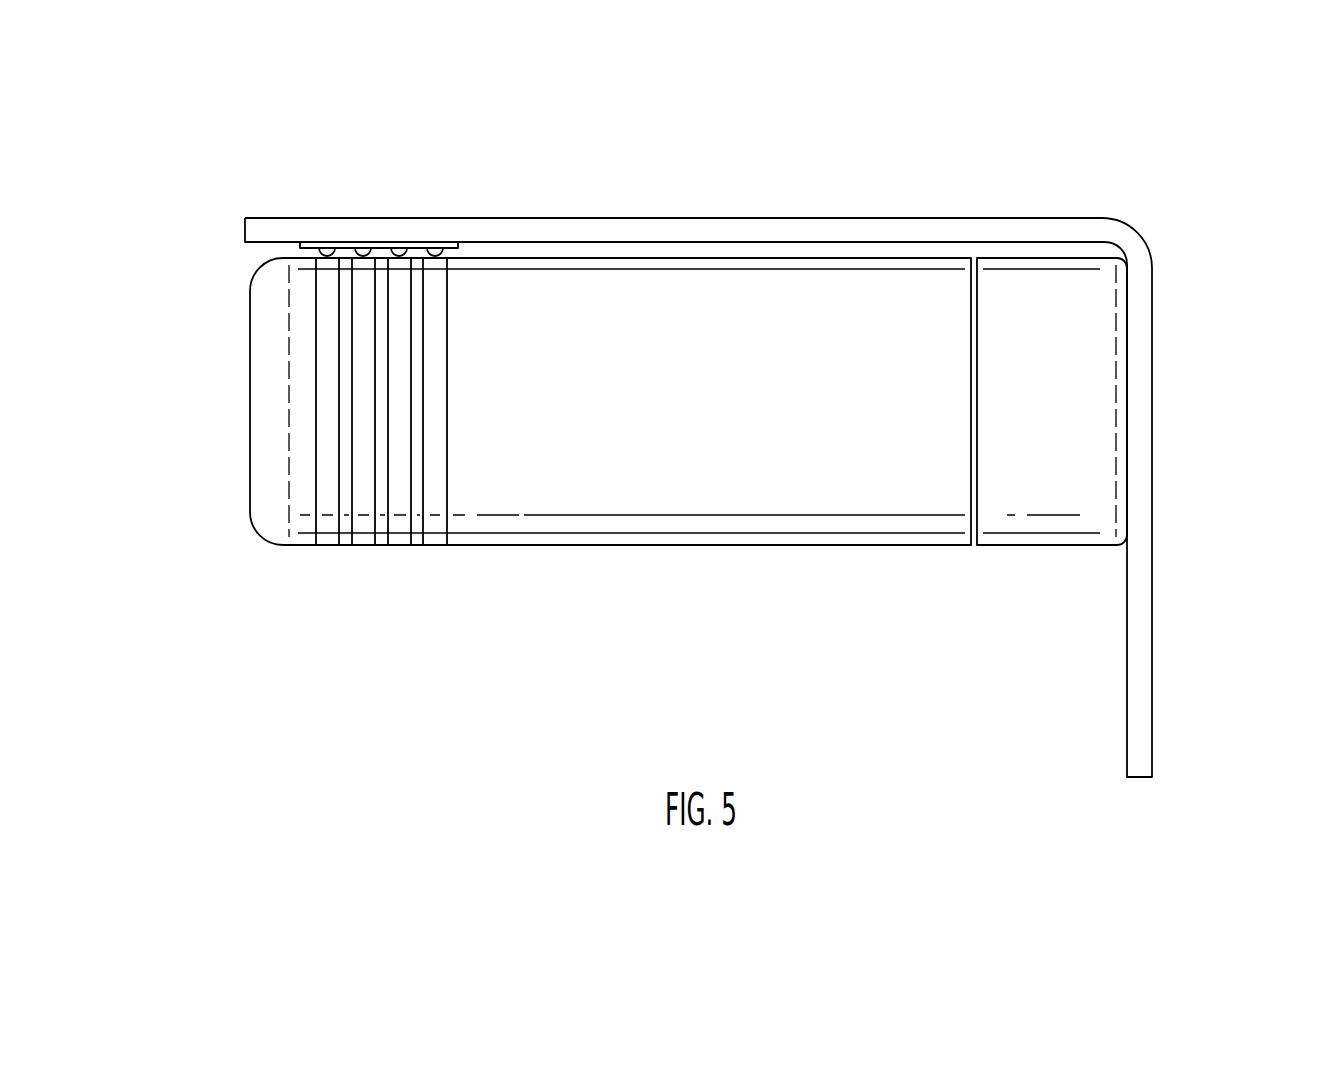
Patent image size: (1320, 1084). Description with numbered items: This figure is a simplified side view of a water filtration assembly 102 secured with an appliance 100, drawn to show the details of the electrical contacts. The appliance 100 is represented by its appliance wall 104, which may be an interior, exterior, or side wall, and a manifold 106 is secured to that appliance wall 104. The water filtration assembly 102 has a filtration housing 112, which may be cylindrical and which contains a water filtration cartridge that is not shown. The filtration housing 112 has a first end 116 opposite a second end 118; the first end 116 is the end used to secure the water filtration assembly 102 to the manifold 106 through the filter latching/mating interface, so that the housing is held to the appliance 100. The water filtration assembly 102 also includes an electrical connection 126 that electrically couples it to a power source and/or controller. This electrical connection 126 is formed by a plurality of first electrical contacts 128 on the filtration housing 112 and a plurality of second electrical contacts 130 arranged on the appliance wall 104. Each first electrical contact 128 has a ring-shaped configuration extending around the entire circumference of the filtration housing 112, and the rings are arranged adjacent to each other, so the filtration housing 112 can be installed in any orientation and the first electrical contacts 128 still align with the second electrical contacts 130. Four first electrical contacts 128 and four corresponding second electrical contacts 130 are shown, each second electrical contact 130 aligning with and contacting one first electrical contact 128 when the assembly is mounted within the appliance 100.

The appliance 100 is at (1115, 217).
The water filtration assembly 102 is at (473, 596).
The appliance wall 104 is at (1153, 581).
The manifold 106 is at (1102, 408).
The filtration housing 112 is at (253, 528).
The first end 116 is at (953, 297).
The second end 118 is at (278, 435).
The electrical connection 126 is at (274, 248).
The first electrical contacts 128 is at (327, 308).
The second electrical contacts 130 is at (328, 255).